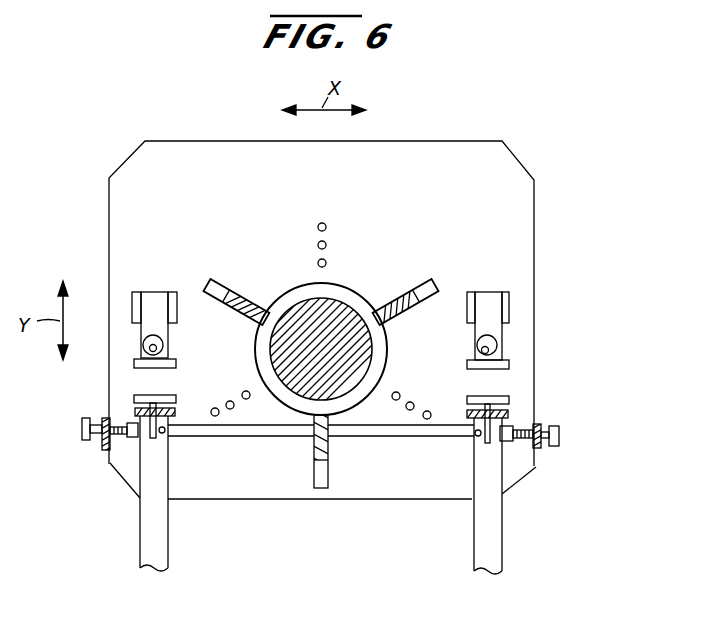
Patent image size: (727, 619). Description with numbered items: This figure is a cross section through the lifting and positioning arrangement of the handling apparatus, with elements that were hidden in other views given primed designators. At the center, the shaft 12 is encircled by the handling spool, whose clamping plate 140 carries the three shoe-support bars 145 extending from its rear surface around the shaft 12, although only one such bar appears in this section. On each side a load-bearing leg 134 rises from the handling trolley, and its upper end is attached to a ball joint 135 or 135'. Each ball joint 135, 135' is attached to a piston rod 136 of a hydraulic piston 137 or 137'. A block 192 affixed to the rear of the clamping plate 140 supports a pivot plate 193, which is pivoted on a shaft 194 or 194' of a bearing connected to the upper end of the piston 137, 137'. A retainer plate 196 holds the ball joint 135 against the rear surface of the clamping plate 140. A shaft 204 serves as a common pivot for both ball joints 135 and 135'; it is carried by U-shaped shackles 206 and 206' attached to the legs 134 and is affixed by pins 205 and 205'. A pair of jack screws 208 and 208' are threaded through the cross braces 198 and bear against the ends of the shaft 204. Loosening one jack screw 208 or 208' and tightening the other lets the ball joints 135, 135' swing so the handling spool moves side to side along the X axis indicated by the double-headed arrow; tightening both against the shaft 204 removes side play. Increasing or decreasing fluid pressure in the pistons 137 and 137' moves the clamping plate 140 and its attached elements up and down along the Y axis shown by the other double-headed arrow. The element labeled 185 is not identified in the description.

The clamping plate 140 is at (452, 150).
The shaft 12 is at (340, 303).
The shoe-support bar 145 is at (329, 455).
The shaft 204 is at (275, 438).
The pivot plate 193 is at (487, 310).
The block 192 is at (509, 313).
The bolt head 185 is at (500, 345).
The shaft 194 is at (453, 340).
The shaft 194' is at (190, 337).
The piston 137 is at (463, 370).
The piston 137' is at (119, 372).
The retainer plate 196 is at (467, 412).
The piston rod 136 is at (508, 413).
The U-shaped shackle 206 is at (320, 448).
The U-shaped shackle 206' is at (186, 395).
The pin 205 is at (453, 445).
The pin 205' is at (192, 449).
The jack screw 208 is at (545, 420).
The jack screw 208' is at (95, 423).
The cross brace 198 is at (103, 448).
The load-bearing leg 134 is at (169, 546).
The ball joint 135 is at (537, 479).
The ball joint 135' is at (110, 482).